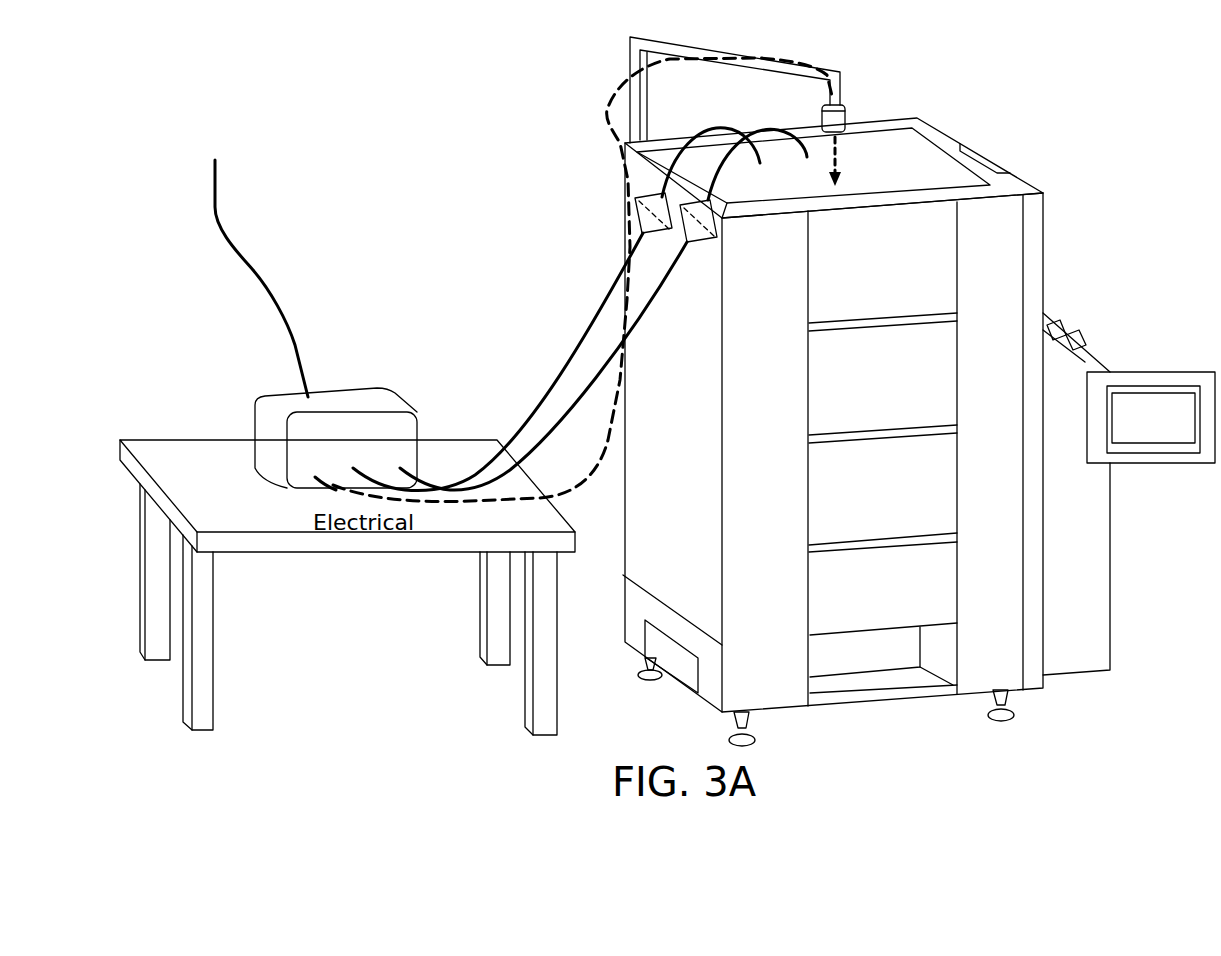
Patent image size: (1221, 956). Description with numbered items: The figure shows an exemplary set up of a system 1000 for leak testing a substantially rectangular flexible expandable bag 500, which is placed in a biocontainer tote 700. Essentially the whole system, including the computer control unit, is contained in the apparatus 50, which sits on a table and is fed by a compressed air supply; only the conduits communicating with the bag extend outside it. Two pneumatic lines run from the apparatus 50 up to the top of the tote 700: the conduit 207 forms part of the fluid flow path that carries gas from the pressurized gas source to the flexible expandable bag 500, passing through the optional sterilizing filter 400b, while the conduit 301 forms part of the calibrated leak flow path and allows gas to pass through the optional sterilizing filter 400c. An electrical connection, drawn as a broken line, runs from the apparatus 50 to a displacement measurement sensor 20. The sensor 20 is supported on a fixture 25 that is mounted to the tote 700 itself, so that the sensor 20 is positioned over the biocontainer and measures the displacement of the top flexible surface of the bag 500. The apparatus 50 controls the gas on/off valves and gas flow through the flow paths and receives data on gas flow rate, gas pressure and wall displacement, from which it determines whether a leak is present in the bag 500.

The system 1000 is at (328, 348).
The apparatus including computer control unit 50 is at (352, 397).
The conduit 301 is at (593, 312).
The conduit 207 is at (640, 327).
The sterilizing filter 400c is at (645, 210).
The sterilizing filter 400b is at (688, 233).
The flexible expandable bag 500 is at (898, 158).
The biocontainer tote 700 is at (1002, 260).
The fixture 25 is at (687, 53).
The displacement measurement sensor 20 is at (845, 115).